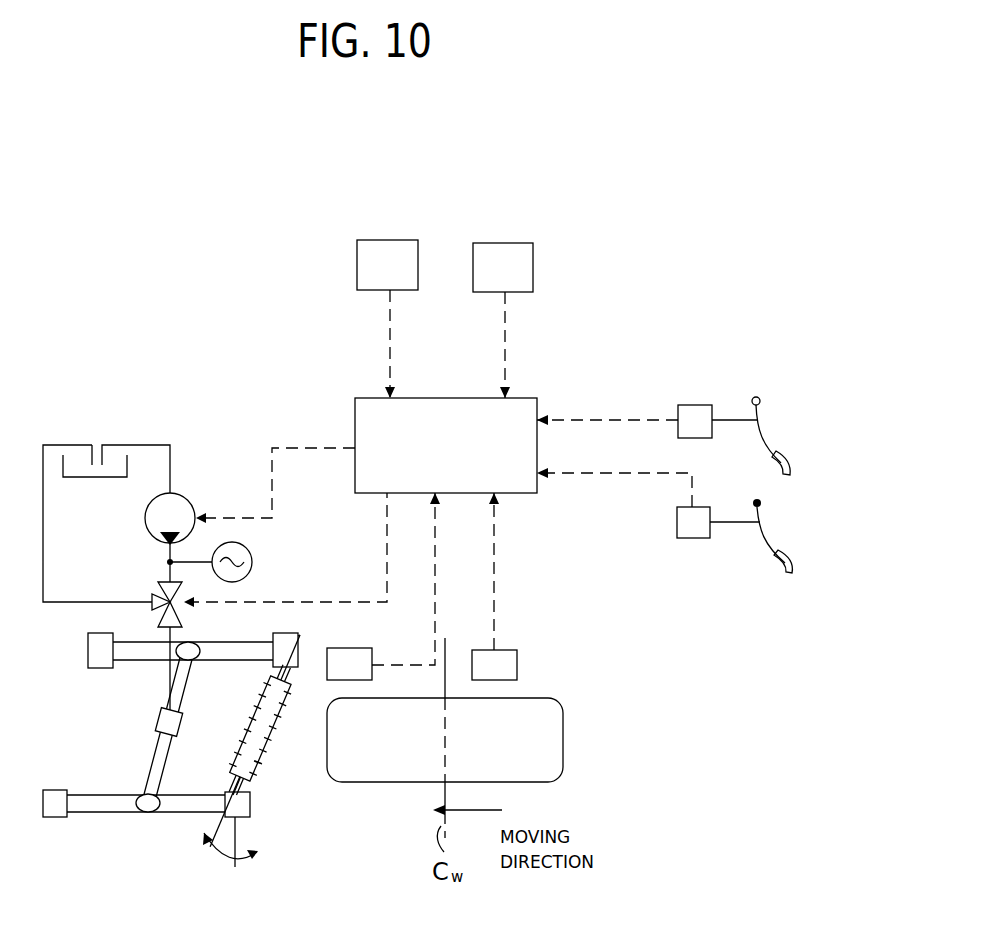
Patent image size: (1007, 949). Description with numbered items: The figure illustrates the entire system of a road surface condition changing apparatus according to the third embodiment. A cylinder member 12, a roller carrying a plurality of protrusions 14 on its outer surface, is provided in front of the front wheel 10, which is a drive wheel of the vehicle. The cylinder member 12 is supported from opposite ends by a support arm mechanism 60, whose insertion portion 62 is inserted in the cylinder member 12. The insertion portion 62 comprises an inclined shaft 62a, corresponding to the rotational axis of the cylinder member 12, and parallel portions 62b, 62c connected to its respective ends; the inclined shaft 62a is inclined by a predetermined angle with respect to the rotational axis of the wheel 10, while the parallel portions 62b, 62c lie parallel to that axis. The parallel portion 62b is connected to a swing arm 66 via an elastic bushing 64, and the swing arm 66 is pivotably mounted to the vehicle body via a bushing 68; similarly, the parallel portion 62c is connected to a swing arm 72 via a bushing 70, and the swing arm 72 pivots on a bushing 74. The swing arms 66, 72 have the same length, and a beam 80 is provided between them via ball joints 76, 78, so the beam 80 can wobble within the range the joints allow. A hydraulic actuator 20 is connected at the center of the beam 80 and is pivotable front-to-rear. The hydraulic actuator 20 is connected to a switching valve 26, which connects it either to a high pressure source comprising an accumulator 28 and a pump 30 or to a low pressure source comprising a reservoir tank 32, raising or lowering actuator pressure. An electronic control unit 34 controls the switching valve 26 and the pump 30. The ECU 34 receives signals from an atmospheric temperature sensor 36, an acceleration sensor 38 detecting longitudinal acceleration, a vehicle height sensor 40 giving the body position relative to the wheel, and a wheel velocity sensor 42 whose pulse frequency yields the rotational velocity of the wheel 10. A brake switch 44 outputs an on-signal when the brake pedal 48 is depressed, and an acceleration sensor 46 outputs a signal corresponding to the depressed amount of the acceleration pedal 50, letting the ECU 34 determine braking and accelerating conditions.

The front wheel 10 is at (556, 720).
The cylinder member 12 is at (260, 766).
The protrusions 14 is at (275, 728).
The hydraulic actuator 20 is at (156, 722).
The switching valve 26 is at (152, 600).
The accumulator 28 is at (252, 560).
The pump 30 is at (189, 500).
The reservoir tank 32 is at (90, 478).
The electronic control unit (ECU) 34 is at (364, 398).
The atmospheric temperature sensor 36 is at (392, 240).
The acceleration sensor 38 is at (507, 243).
The vehicle height sensor 40 is at (358, 648).
The wheel velocity sensor 42 is at (517, 665).
The brake switch 44 is at (700, 405).
The acceleration sensor 46 is at (694, 538).
The brake pedal 48 is at (767, 437).
The acceleration pedal 50 is at (770, 532).
The support arm mechanism 60 is at (190, 822).
The insertion portion 62 is at (268, 672).
The inclined shaft 62a is at (239, 778).
The parallel portion 62b is at (234, 793).
The parallel portion 62c is at (299, 672).
The bushing 64 is at (250, 810).
The swing arm 66 is at (100, 812).
The bushing 68 is at (57, 818).
The bushing 70 is at (282, 640).
The swing arm 72 is at (142, 642).
The bushing 74 is at (88, 652).
The ball joint 76 is at (148, 814).
The ball joint 78 is at (192, 643).
The beam 80 is at (157, 765).